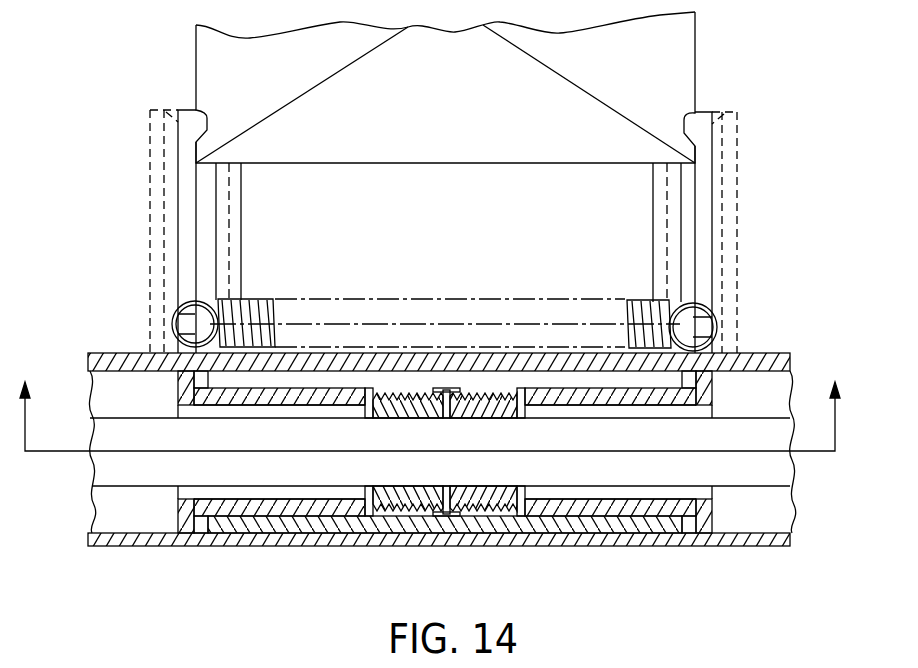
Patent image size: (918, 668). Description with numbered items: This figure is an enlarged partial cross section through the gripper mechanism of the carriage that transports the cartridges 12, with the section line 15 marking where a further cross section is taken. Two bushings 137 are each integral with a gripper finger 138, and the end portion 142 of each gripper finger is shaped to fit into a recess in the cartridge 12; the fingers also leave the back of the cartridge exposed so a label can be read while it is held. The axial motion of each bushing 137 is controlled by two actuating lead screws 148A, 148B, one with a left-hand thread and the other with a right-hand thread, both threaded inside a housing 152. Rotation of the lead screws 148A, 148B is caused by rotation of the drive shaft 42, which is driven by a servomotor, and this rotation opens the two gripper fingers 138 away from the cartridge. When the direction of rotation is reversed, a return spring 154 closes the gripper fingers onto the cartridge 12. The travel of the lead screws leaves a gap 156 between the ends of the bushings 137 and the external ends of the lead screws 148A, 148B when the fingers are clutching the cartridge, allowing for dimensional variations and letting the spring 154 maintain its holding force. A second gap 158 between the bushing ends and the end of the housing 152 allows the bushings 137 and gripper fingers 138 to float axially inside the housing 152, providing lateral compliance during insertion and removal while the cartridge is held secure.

The cartridge 12 is at (674, 64).
The end portion of gripper finger 142 is at (197, 110).
The gripper finger 138 is at (178, 226).
The return spring 154 is at (462, 298).
The actuating lead screw 148A is at (418, 418).
The actuating lead screw 148B is at (478, 418).
The drive shaft 42 is at (130, 472).
The section line 15- 15 is at (435, 403).
The bushing 137 is at (183, 518).
The gap 158 is at (188, 533).
The housing 152 is at (293, 533).
The gap 156 is at (366, 516).